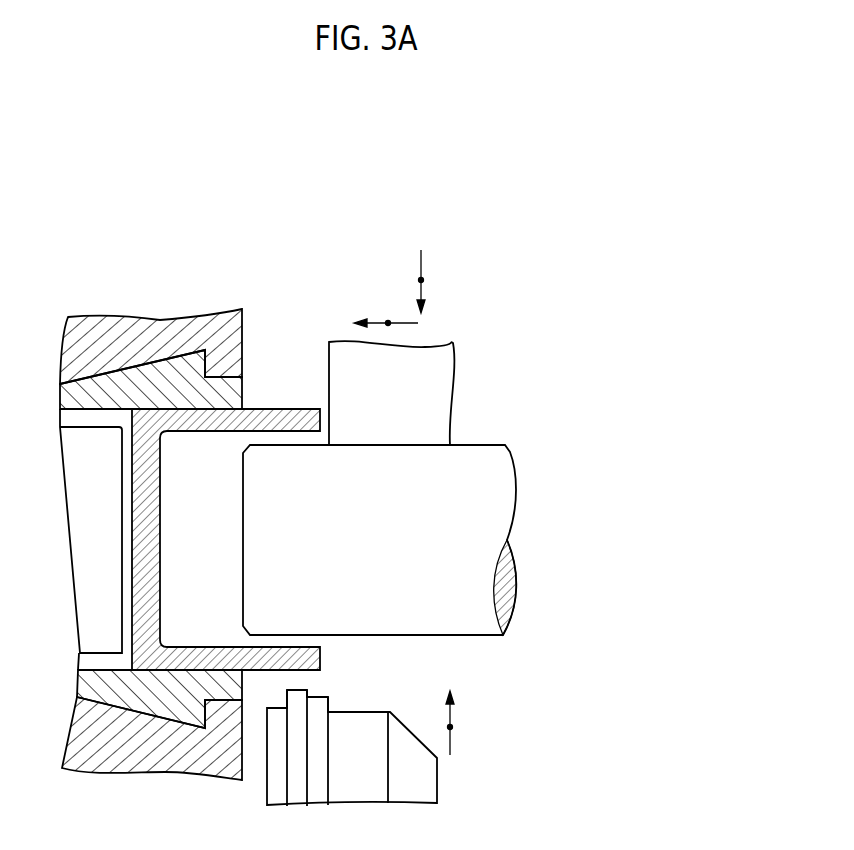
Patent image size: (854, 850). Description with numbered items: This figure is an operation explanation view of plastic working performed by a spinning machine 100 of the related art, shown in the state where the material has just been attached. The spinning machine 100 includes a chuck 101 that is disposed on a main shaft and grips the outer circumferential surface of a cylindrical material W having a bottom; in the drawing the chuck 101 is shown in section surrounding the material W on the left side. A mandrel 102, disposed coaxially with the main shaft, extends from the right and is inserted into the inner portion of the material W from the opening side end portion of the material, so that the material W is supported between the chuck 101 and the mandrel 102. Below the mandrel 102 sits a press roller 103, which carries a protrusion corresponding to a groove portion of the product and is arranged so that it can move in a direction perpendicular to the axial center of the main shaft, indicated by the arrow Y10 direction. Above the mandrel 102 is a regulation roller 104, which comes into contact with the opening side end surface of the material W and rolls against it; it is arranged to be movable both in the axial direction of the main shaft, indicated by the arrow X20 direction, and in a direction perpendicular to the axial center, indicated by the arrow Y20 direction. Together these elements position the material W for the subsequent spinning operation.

The spinning machine 100 is at (560, 389).
The chuck 101 is at (252, 326).
The mandrel 102 is at (480, 443).
The press roller 103 is at (360, 710).
The regulation roller 104 is at (450, 382).
The material W is at (132, 516).
The arrow X20 direction X20 is at (388, 323).
The arrow Y20 direction Y20 is at (421, 280).
The arrow Y10 direction Y10 is at (450, 727).